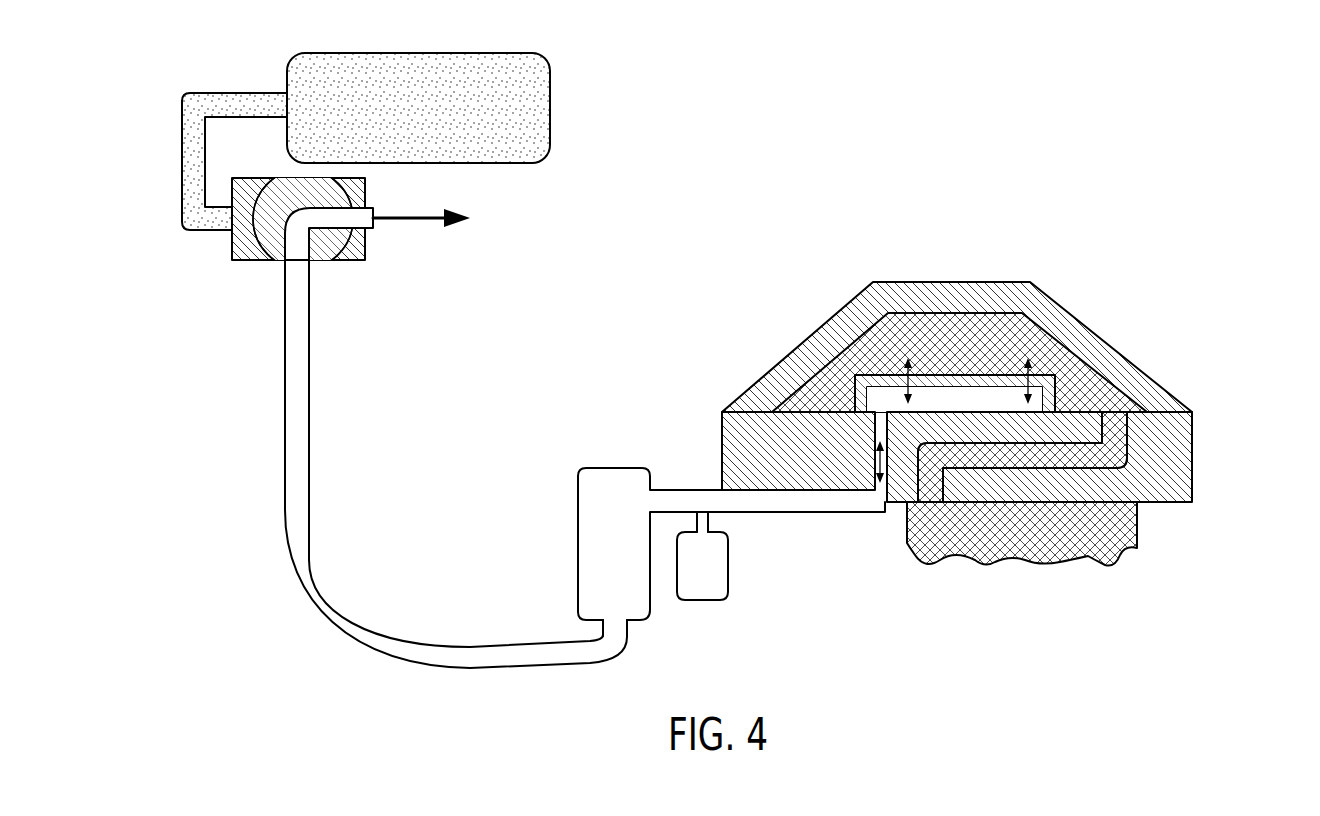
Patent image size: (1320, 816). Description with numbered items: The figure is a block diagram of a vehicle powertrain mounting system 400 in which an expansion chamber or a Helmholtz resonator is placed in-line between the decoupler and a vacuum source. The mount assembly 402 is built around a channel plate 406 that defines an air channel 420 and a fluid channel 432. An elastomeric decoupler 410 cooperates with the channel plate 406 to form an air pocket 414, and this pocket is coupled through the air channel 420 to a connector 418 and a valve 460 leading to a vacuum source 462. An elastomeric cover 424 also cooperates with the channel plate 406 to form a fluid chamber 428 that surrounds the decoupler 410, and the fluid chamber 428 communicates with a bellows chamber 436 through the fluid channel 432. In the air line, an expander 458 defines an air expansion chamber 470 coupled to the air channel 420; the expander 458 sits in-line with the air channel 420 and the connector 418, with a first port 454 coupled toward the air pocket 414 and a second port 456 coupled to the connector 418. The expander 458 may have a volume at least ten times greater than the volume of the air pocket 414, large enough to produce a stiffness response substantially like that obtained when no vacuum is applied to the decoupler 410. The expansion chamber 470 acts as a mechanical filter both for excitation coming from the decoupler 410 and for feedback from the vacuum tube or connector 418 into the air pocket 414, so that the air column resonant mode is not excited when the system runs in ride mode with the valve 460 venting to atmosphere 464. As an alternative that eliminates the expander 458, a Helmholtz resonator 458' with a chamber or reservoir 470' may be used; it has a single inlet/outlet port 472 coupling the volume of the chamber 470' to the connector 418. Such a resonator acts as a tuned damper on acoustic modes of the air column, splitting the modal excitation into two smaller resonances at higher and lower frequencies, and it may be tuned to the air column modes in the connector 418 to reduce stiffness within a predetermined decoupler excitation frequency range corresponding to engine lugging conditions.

The vehicle powertrain mounting system 400 is at (728, 166).
The ejection head assembly 402 is at (987, 421).
The channel plate 406 is at (1193, 461).
The elastomeric decoupler 410 is at (893, 382).
The air pocket 414 is at (1033, 403).
The connector 418 is at (323, 582).
The air channel 420 is at (879, 493).
The elastomeric cover 424 is at (1027, 293).
The fluid chamber 428 is at (940, 330).
The fluid channel 432 is at (1113, 447).
The bellows chamber 436 is at (1040, 551).
The first port 454 is at (657, 476).
The second port 456 is at (582, 630).
The expander 458 is at (699, 544).
The Helmholtz resonator 458' is at (738, 566).
The valve 460 is at (236, 264).
The vacuum source 462 is at (553, 144).
The atmosphere 464 is at (413, 222).
The air expansion chamber 470 is at (632, 637).
The chamber or reservoir 470' is at (714, 591).
The inlet/outlet port 472 is at (726, 521).